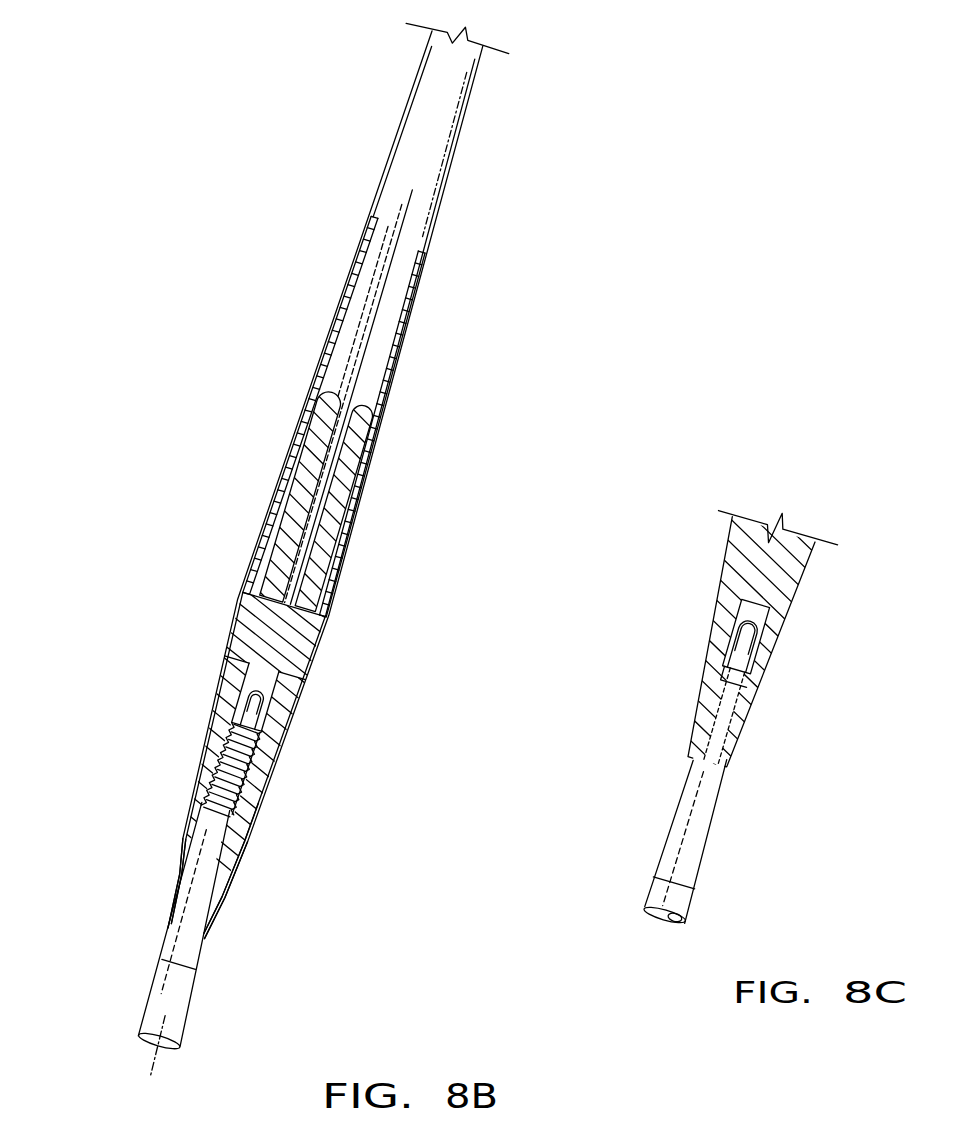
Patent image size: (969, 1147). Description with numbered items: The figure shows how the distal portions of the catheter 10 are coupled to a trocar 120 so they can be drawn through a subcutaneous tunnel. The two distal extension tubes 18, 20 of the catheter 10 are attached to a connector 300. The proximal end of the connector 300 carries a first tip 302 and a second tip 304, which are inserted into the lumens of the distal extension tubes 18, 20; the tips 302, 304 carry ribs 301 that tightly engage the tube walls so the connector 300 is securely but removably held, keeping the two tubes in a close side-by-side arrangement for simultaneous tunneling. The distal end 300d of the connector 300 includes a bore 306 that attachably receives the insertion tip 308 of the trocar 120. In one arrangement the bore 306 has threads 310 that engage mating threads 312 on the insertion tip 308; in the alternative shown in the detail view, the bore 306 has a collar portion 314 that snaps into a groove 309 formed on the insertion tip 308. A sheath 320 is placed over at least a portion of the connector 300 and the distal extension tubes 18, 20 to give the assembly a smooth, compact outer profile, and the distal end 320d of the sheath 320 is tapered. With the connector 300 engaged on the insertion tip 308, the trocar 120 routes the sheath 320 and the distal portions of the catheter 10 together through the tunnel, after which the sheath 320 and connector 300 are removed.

In FIG. 8B, the catheter 10 is at (500, 103).
In FIG. 8B, the distal extension tube 18 is at (365, 290).
In FIG. 8B, the distal extension tube 20 is at (385, 323).
In FIG. 8B, the trocar 120 is at (200, 963).
In FIG. 8C, the trocar 120 is at (708, 843).
In FIG. 8B, the connector 300 is at (293, 677).
In FIG. 8C, the connector 300 is at (727, 577).
In FIG. 8B, the distal end of the connector 300d is at (257, 825).
In FIG. 8B, the ribs 301 is at (335, 510).
In FIG. 8B, the first tip 302 is at (307, 463).
In FIG. 8B, the second tip 304 is at (343, 480).
In FIG. 8B, the bore 306 is at (268, 718).
In FIG. 8C, the bore 306 is at (750, 615).
In FIG. 8B, the insertion tip 308 is at (255, 696).
In FIG. 8C, the insertion tip 308 is at (742, 652).
In FIG. 8C, the groove 309 is at (727, 678).
In FIG. 8B, the threads 310 is at (242, 726).
In FIG. 8B, the mating threads 312 is at (255, 775).
In FIG. 8C, the collar portion 314 is at (742, 678).
In FIG. 8B, the sheath 320 is at (320, 657).
In FIG. 8B, the distal end of the sheath 320d is at (193, 843).